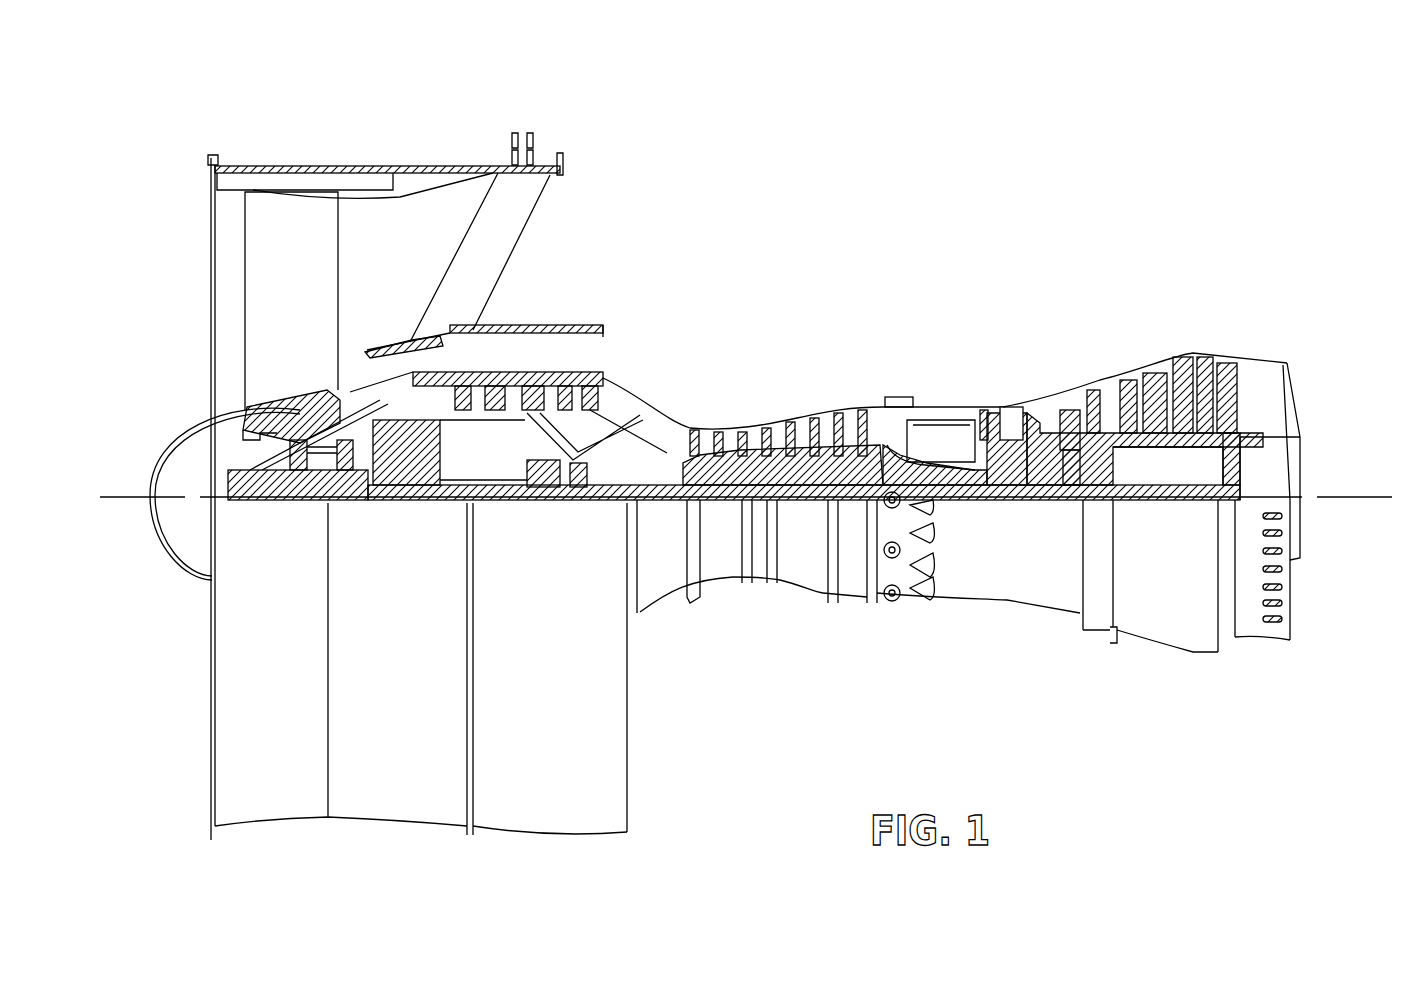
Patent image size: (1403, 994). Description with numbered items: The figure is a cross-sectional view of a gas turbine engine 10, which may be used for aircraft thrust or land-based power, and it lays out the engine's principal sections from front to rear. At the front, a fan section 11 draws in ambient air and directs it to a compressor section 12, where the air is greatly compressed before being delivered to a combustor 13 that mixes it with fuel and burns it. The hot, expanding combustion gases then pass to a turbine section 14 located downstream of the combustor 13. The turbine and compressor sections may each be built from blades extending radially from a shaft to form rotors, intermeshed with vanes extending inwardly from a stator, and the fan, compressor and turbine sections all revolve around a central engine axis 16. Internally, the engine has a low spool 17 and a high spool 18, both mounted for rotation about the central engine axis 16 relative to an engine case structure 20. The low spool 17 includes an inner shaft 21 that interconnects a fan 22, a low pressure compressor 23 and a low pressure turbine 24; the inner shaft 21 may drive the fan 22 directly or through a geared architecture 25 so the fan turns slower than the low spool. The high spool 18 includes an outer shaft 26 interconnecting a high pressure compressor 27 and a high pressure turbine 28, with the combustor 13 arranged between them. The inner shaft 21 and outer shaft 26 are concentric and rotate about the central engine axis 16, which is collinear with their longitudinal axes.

The gas turbine engine 10 is at (970, 212).
The fan section 11 is at (465, 152).
The compressor section 12 is at (478, 283).
The combustor 13 is at (993, 283).
The turbine section 14 is at (1227, 283).
The central engine axis 16 is at (1330, 497).
The low spool 17 is at (812, 501).
The high spool 18 is at (855, 460).
The engine case structure 20 is at (860, 598).
The inner shaft 21 is at (666, 498).
The fan 22 is at (302, 306).
The low pressure compressor 23 is at (548, 388).
The low pressure turbine 24 is at (1158, 382).
The geared architecture 25 is at (418, 468).
The outer shaft 26 is at (930, 468).
The high pressure compressor 27 is at (791, 466).
The high pressure turbine 28 is at (1010, 405).